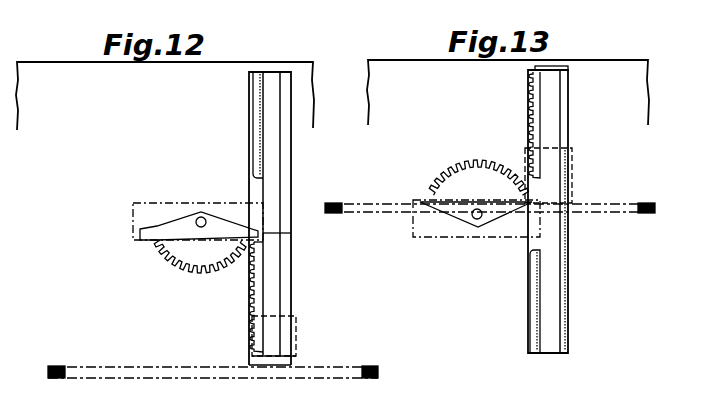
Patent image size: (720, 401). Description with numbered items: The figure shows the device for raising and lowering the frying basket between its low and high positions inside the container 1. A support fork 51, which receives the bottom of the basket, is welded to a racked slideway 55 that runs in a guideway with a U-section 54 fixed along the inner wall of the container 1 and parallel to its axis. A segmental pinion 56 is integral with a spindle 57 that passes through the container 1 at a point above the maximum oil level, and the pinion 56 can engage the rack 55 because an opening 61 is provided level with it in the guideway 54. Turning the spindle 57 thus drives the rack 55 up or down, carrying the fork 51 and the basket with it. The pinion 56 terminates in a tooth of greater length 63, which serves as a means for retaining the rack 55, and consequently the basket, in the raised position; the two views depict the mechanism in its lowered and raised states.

In FIG. 12, the container 1 is at (210, 73).
In FIG. 13, the container 1 is at (423, 73).
In FIG. 12, the support fork 51 is at (52, 365).
In FIG. 13, the support fork 51 is at (336, 203).
In FIG. 12, the guideway with a U-section 54 is at (258, 122).
In FIG. 13, the guideway with a U-section 54 is at (540, 93).
In FIG. 12, the racked slideway 55 is at (251, 309).
In FIG. 12, the segmental pinion 56 is at (172, 247).
In FIG. 13, the segmental pinion 56 is at (504, 165).
In FIG. 12, the spindle 57 is at (197, 217).
In FIG. 12, the opening 61 is at (252, 181).
In FIG. 13, the opening 61 is at (530, 251).
In FIG. 12, the tooth of greater length 63 is at (157, 232).
In FIG. 13, the tooth of greater length 63 is at (525, 214).